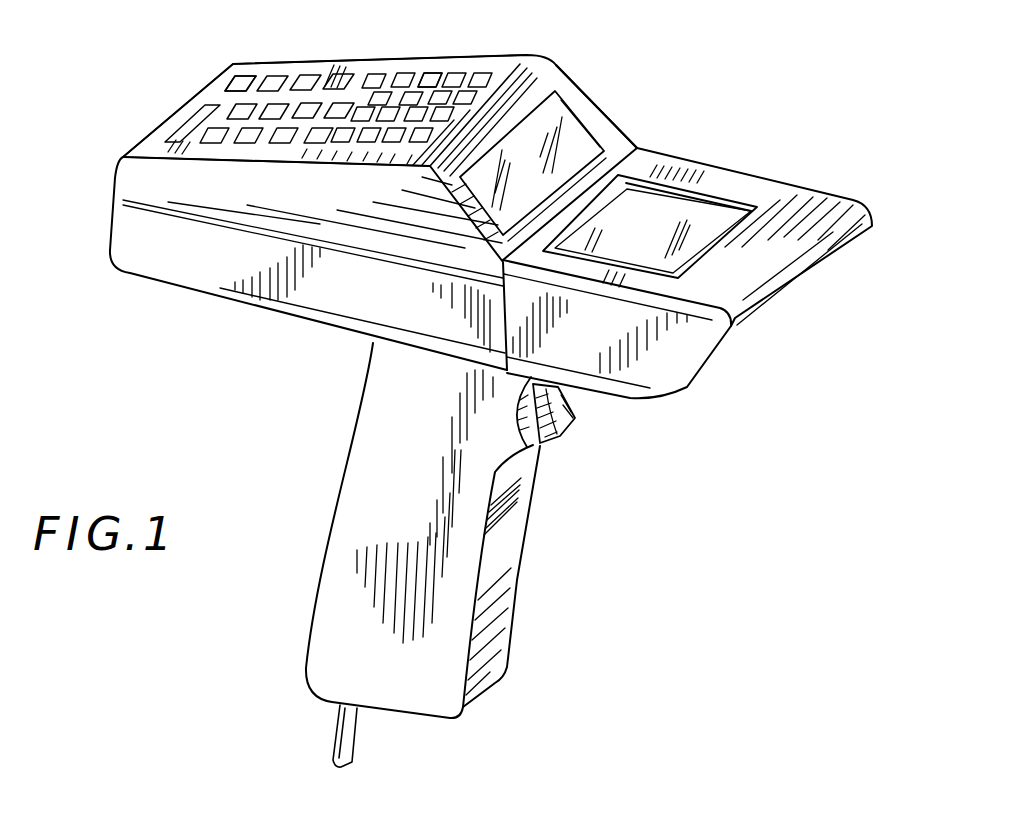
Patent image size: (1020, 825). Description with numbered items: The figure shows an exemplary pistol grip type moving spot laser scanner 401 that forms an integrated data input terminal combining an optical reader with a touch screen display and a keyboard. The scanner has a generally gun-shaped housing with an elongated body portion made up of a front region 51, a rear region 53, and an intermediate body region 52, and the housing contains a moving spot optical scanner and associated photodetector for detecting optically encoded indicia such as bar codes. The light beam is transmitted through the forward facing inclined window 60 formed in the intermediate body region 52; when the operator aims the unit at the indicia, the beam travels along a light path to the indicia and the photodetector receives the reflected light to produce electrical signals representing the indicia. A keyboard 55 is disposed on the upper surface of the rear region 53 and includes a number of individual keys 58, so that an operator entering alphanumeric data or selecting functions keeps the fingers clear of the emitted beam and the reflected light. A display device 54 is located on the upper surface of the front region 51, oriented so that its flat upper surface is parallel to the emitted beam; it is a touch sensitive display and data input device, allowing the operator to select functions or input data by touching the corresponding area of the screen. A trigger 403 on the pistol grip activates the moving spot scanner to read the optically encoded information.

The moving spot laser scanner 401 is at (226, 348).
The trigger 403 is at (576, 434).
The front region 51 is at (845, 182).
The intermediate body region 52 is at (638, 145).
The rear region 53 is at (367, 56).
The display device 54 is at (703, 217).
The keyboard 55 is at (432, 72).
The keys 58 is at (237, 75).
The forward facing inclined window 60 is at (574, 130).